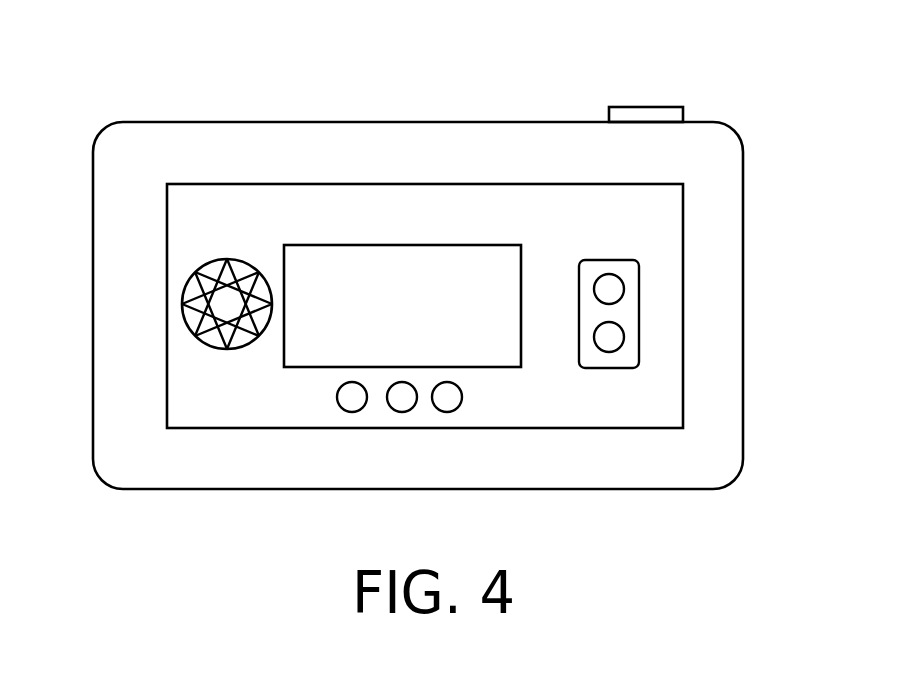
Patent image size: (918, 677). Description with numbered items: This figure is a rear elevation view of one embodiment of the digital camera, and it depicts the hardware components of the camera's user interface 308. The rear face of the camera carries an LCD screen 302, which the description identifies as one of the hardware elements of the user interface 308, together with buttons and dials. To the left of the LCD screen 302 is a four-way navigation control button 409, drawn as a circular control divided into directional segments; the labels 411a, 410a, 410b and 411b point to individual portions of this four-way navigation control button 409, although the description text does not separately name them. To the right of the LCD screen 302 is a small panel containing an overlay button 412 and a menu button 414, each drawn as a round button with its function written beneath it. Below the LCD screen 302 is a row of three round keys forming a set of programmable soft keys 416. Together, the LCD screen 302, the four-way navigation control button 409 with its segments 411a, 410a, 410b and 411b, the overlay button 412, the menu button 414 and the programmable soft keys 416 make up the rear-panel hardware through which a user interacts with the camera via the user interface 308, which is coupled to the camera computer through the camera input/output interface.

The user interface 308 is at (557, 84).
The LCD screen 302 is at (432, 245).
The four-way navigation control button 409 is at (153, 207).
The directional pad segment 411a is at (226, 259).
The directional pad segment 410a is at (186, 292).
The directional pad segment 410b is at (206, 321).
The directional pad segment 411b is at (217, 348).
The overlay button 412 is at (624, 279).
The menu button 414 is at (624, 332).
The programmable soft keys 416 is at (447, 412).